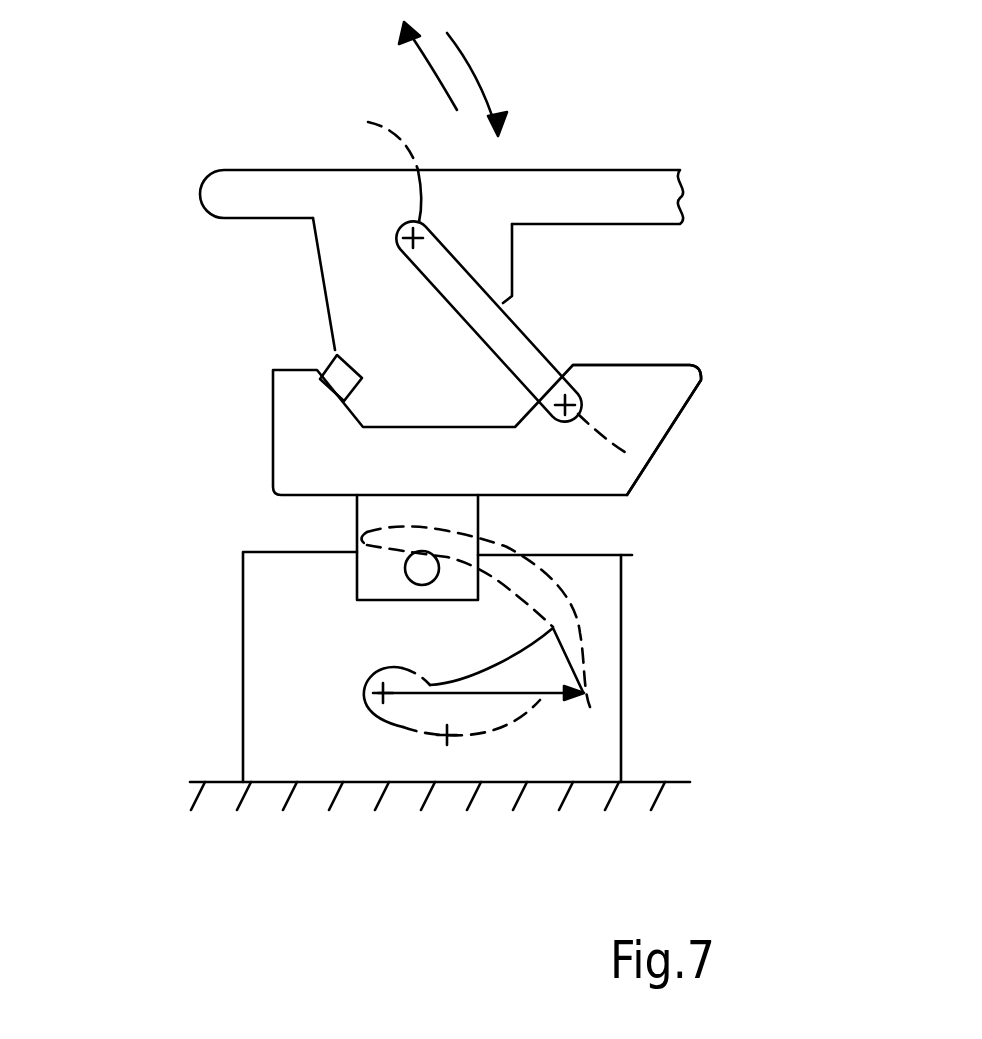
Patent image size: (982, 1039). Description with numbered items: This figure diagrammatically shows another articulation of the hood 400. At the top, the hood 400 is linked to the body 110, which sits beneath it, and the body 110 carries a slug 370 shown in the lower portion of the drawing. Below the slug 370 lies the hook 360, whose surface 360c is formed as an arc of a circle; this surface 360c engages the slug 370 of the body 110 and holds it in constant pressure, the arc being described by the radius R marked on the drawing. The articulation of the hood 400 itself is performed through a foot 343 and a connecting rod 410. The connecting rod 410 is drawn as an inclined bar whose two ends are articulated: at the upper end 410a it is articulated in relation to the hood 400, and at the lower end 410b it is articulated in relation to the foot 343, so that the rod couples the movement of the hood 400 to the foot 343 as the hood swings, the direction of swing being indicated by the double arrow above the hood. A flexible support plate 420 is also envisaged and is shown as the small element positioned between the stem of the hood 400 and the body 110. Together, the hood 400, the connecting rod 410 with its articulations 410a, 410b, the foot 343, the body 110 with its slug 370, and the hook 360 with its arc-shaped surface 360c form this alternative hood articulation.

The hood 400 is at (596, 192).
The connecting rod 410 is at (517, 352).
The articulation point of connecting rod with hood 410a is at (350, 162).
The articulation point of connecting rod with foot 410b is at (630, 454).
The flexible support plate 420 is at (330, 367).
The body 110 is at (300, 433).
The foot 343 is at (690, 381).
The slug 370 is at (410, 578).
The hook 360 is at (447, 736).
The surface of the hook 360c is at (510, 590).